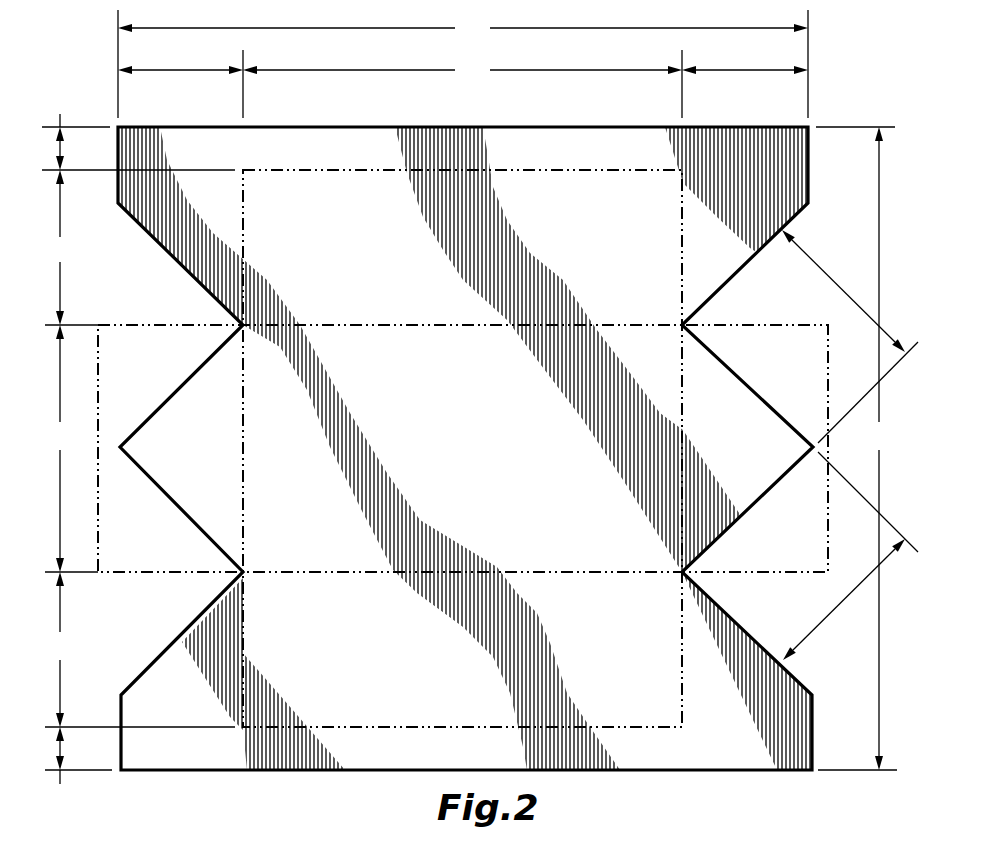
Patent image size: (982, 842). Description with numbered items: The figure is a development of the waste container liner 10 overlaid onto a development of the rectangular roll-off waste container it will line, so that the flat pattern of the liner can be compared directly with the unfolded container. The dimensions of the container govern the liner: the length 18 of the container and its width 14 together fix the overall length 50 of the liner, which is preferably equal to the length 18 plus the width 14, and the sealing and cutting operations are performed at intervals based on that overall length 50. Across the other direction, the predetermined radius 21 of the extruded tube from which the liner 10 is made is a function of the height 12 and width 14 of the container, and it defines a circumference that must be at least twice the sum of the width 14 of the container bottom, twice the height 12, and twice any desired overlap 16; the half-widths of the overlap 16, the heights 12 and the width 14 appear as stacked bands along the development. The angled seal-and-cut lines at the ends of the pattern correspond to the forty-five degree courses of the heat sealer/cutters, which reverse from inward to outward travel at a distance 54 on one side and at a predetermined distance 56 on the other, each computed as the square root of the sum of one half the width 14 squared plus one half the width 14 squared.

The waste container liner 10 is at (560, 190).
The overall length of the liner 50 is at (463, 64).
The length of the roll-off waste container 18 is at (462, 84).
The width of the roll-off waste container 14 is at (118, 70).
The overlap 16 is at (138, 447).
The height of the roll-off waste container 12 is at (67, 448).
The predetermined radius 21 is at (856, 448).
The predetermined distance 56 is at (850, 336).
The distance 54 is at (850, 556).